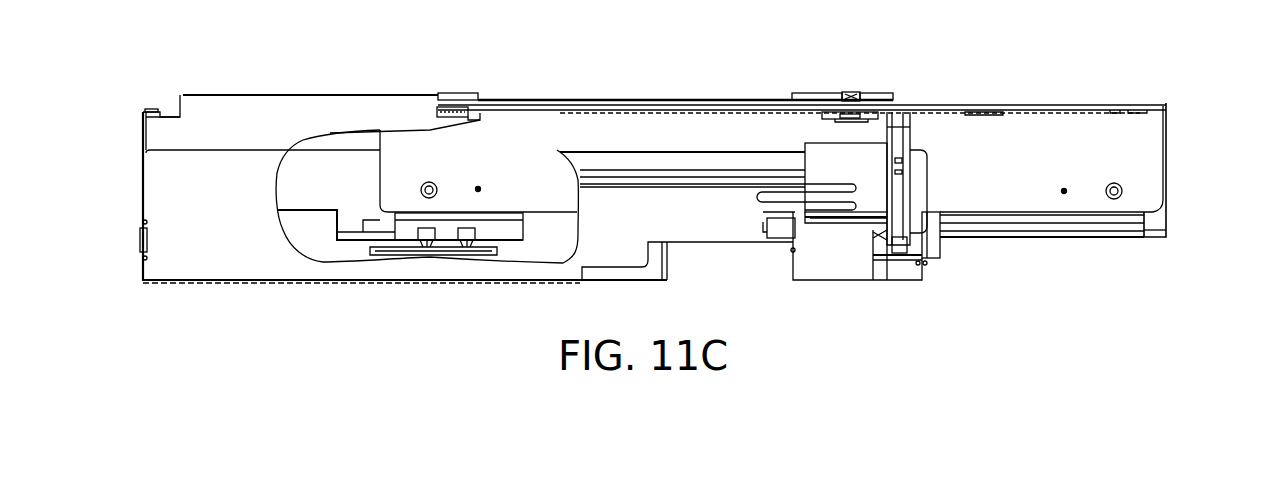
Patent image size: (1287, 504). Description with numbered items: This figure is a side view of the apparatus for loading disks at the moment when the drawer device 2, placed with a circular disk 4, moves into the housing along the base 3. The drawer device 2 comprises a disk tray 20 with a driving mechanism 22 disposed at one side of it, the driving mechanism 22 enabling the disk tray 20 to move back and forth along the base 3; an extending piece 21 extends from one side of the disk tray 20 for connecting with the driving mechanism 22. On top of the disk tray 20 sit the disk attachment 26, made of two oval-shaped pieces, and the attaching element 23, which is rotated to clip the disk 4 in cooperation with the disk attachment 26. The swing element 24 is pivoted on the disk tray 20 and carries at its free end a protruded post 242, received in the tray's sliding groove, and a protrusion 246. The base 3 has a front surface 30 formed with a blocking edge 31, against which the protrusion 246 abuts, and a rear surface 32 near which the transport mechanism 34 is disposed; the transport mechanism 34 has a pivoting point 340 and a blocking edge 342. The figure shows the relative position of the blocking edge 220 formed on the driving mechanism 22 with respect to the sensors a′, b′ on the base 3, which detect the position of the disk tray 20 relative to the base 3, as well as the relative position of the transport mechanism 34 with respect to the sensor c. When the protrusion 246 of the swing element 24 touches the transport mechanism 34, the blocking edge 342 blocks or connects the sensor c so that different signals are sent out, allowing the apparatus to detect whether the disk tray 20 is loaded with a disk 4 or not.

The drawer device 2 is at (1150, 74).
The base 3 is at (337, 78).
The circular disk 4 is at (647, 96).
The disk tray 20 is at (1028, 103).
The extending piece 21 is at (1143, 143).
The driving mechanism 22 is at (1170, 211).
The blocking edge 220 is at (1130, 230).
The attaching element 23 is at (872, 92).
The swing element 24 is at (822, 113).
The protruded post 242 is at (848, 96).
The protrusion 246 is at (838, 121).
The disk attachment 26 is at (476, 92).
The front surface 30 is at (143, 175).
The blocking edge 31 is at (170, 110).
The rear surface 32 is at (957, 248).
The transport mechanism 34 is at (912, 138).
The pivoting point 340 is at (902, 167).
The blocking edge 342 is at (887, 233).
The sensor a′ is at (414, 245).
The sensor b′ is at (466, 241).
The sensor c is at (922, 262).